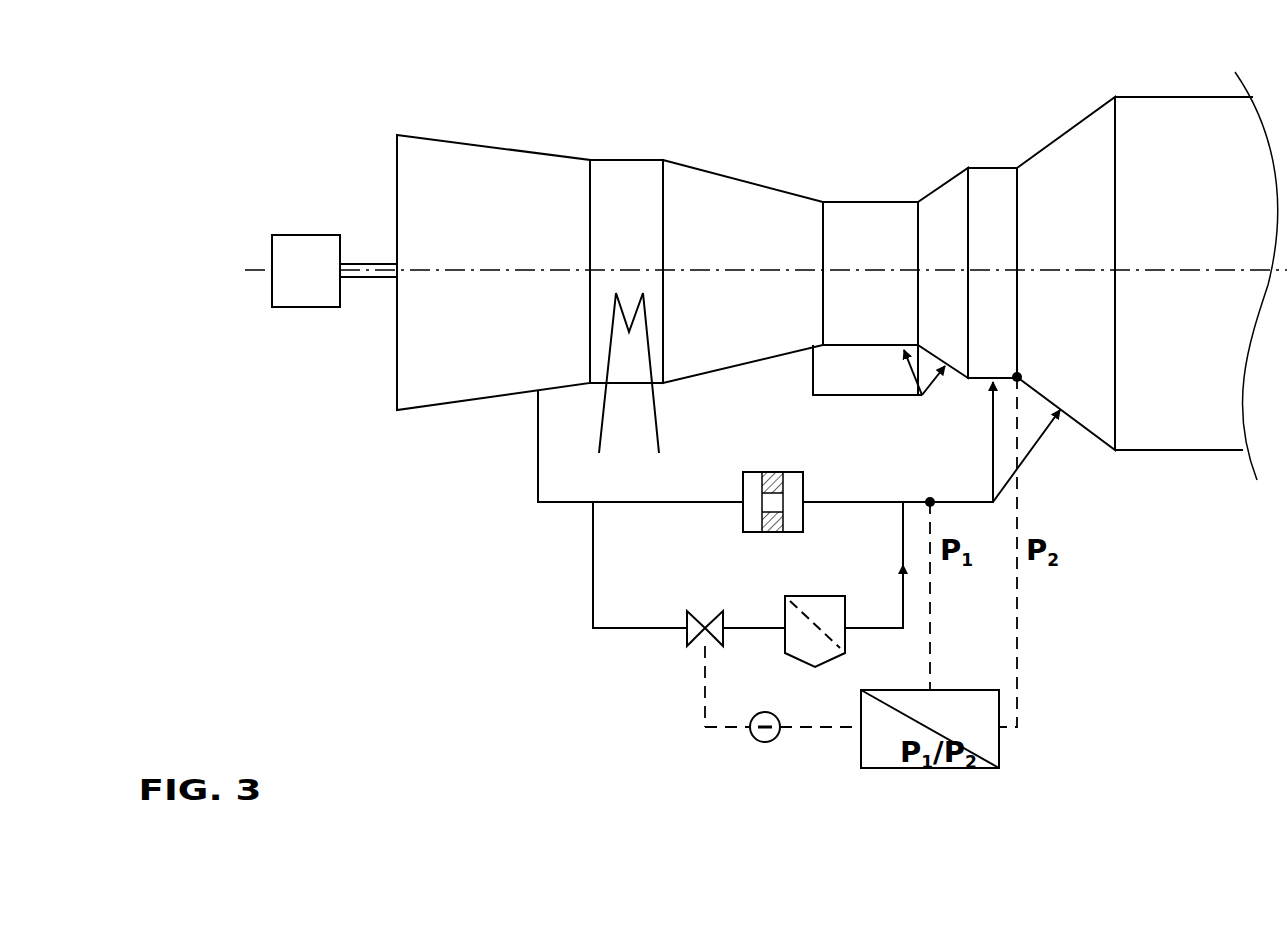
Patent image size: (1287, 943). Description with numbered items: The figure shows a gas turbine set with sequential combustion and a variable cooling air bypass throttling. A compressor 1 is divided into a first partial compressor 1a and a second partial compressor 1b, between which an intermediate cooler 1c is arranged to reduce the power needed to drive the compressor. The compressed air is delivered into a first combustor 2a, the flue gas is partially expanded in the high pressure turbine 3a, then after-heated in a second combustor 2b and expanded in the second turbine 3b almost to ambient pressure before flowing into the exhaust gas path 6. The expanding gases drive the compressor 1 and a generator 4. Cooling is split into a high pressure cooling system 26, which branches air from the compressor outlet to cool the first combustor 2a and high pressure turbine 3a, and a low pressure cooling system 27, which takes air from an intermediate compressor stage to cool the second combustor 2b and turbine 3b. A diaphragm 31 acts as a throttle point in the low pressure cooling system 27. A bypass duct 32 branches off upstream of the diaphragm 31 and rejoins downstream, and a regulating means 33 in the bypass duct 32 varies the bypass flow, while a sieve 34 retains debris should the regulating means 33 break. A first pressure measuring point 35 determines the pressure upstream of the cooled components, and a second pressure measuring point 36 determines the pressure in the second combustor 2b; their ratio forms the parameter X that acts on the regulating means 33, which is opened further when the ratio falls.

The compressor 1 is at (823, 202).
The first partial compressor 1a is at (468, 249).
The second partial compressor 1b is at (721, 249).
The intermediate cooler 1c is at (644, 249).
The first combustor 2a is at (851, 249).
The second combustor 2b is at (975, 249).
The high pressure turbine 3a is at (962, 249).
The second turbine 3b is at (1043, 249).
The generator 4 is at (316, 285).
The exhaust gas path 6 is at (1177, 249).
The high pressure cooling system 26 is at (813, 373).
The low pressure cooling system 27 is at (563, 502).
The diaphragm 31 is at (745, 515).
The bypass duct 32 is at (623, 628).
The regulating means 33 is at (706, 617).
The sieve 34 is at (823, 596).
The first pressure measuring point 35 is at (930, 502).
The second pressure measuring point 36 is at (1017, 377).